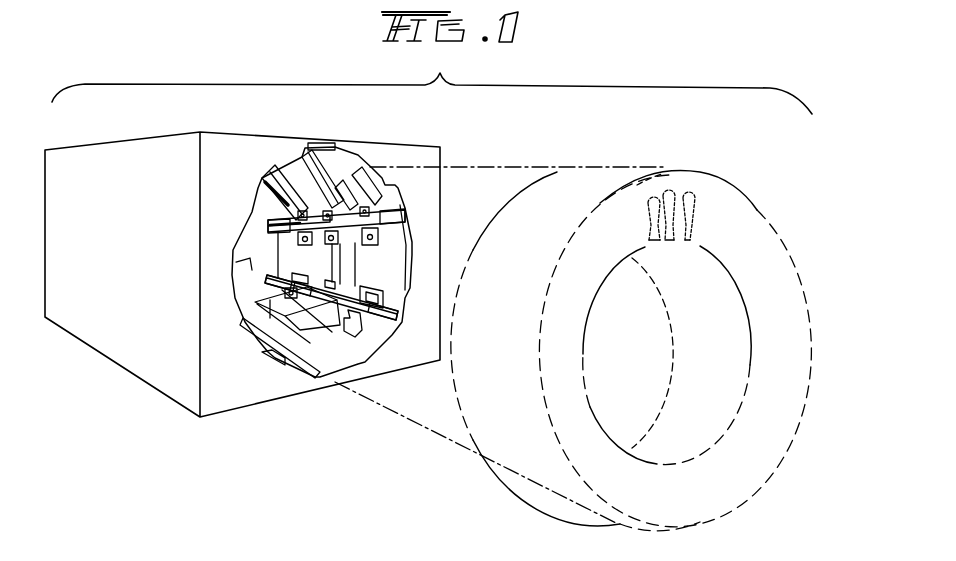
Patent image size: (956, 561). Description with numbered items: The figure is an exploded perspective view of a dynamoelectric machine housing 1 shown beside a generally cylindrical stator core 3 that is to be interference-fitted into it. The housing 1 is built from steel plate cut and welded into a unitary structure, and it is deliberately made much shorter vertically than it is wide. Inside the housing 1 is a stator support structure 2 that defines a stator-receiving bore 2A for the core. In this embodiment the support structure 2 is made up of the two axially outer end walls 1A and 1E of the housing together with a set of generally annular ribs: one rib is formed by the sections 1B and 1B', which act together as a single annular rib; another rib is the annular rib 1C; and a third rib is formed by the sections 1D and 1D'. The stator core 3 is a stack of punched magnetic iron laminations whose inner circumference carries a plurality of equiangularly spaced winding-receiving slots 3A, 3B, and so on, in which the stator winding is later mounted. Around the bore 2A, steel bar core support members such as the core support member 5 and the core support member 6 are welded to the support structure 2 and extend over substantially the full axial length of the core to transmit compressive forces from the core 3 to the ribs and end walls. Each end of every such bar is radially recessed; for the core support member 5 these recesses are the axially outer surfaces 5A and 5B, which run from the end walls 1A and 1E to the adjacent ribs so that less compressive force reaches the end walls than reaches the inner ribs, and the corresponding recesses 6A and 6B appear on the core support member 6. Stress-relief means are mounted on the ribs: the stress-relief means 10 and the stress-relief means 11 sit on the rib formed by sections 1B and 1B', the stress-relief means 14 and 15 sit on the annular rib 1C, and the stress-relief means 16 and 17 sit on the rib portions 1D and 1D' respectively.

The dynamoelectric machine housing 1 is at (168, 359).
The axially outer end wall 1A is at (405, 354).
The annular rib section 1B is at (361, 325).
The annular rib section 1B' is at (333, 180).
The annular rib 1C is at (340, 258).
The annular rib section 1D is at (262, 340).
The annular rib section 1D' is at (271, 181).
The axially outer end wall 1E is at (267, 197).
The stator support structure 2 is at (185, 257).
The stator-receiving bore 2A is at (250, 270).
The stator core 3 is at (773, 260).
The winding-receiving slot 3A is at (697, 190).
The winding-receiving slot 3B is at (675, 187).
The core support member 5 is at (335, 292).
The radially recessed axially outer surface 5A is at (398, 312).
The radially recessed axially outer surface 5B is at (279, 283).
The core support member 6 is at (336, 248).
The radially recessed axially outer surface 6A is at (405, 215).
The radially recessed axially outer surface 6B is at (275, 230).
The stress-relief means 10 is at (380, 296).
The stress-relief means 11 is at (371, 207).
The stress-relief means 14 is at (322, 330).
The stress-relief means 15 is at (328, 203).
The stress-relief means 16 is at (312, 278).
The stress-relief means 17 is at (298, 204).